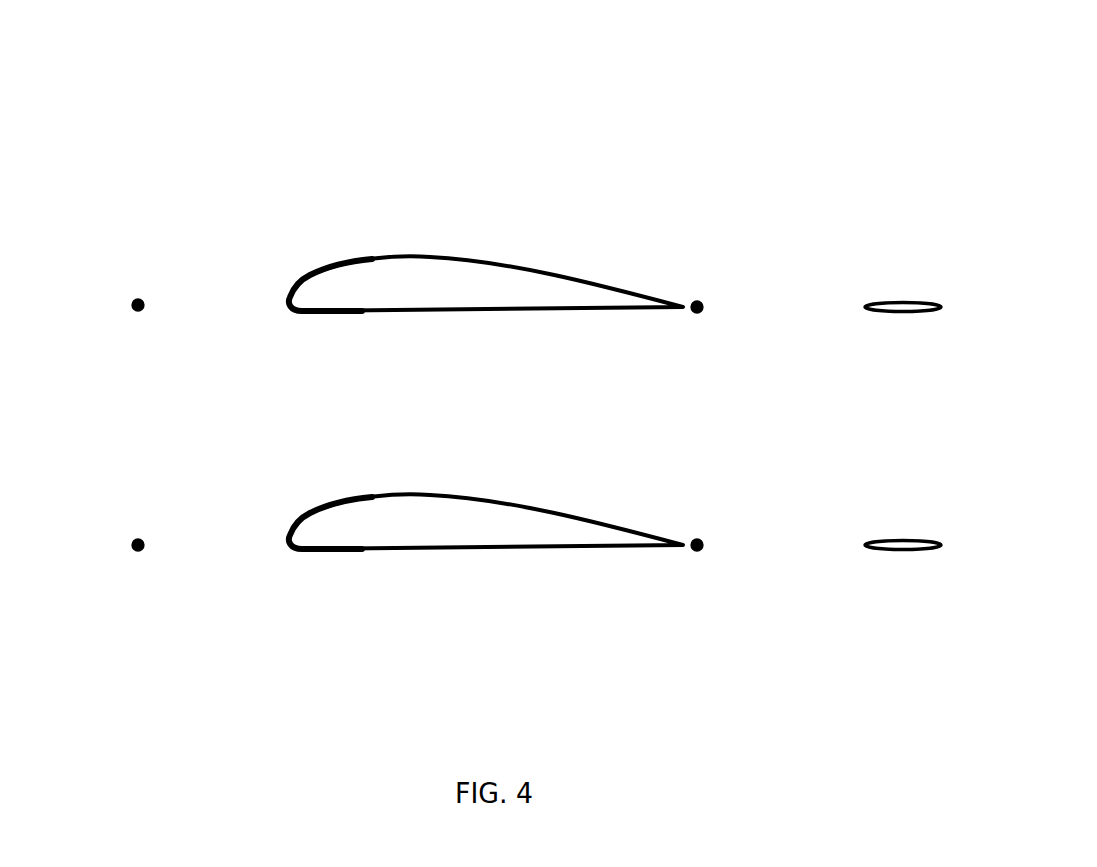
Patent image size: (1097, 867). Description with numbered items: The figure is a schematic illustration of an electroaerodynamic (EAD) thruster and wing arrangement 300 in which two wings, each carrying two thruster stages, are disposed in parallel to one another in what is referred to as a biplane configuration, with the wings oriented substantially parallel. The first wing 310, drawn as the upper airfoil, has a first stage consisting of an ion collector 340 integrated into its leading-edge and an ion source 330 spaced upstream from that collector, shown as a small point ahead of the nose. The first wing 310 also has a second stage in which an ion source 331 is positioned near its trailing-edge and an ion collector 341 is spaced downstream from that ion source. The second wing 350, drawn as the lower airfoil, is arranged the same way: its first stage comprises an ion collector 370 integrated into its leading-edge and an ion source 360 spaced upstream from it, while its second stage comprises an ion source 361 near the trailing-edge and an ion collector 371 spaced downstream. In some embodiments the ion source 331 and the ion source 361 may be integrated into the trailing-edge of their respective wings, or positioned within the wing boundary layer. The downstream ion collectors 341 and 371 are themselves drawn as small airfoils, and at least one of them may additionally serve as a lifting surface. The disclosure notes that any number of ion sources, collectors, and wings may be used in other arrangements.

The EAD thruster and wing arrangement 300 is at (211, 215).
The first wing 310 is at (430, 255).
The ion source 330 is at (134, 297).
The ion source 331 is at (695, 294).
The ion collector 340 is at (307, 274).
The ion collector 341 is at (893, 294).
The second wing 350 is at (448, 551).
The ion source 360 is at (134, 553).
The ion source 361 is at (702, 553).
The ion collector 370 is at (305, 552).
The ion collector 371 is at (900, 550).